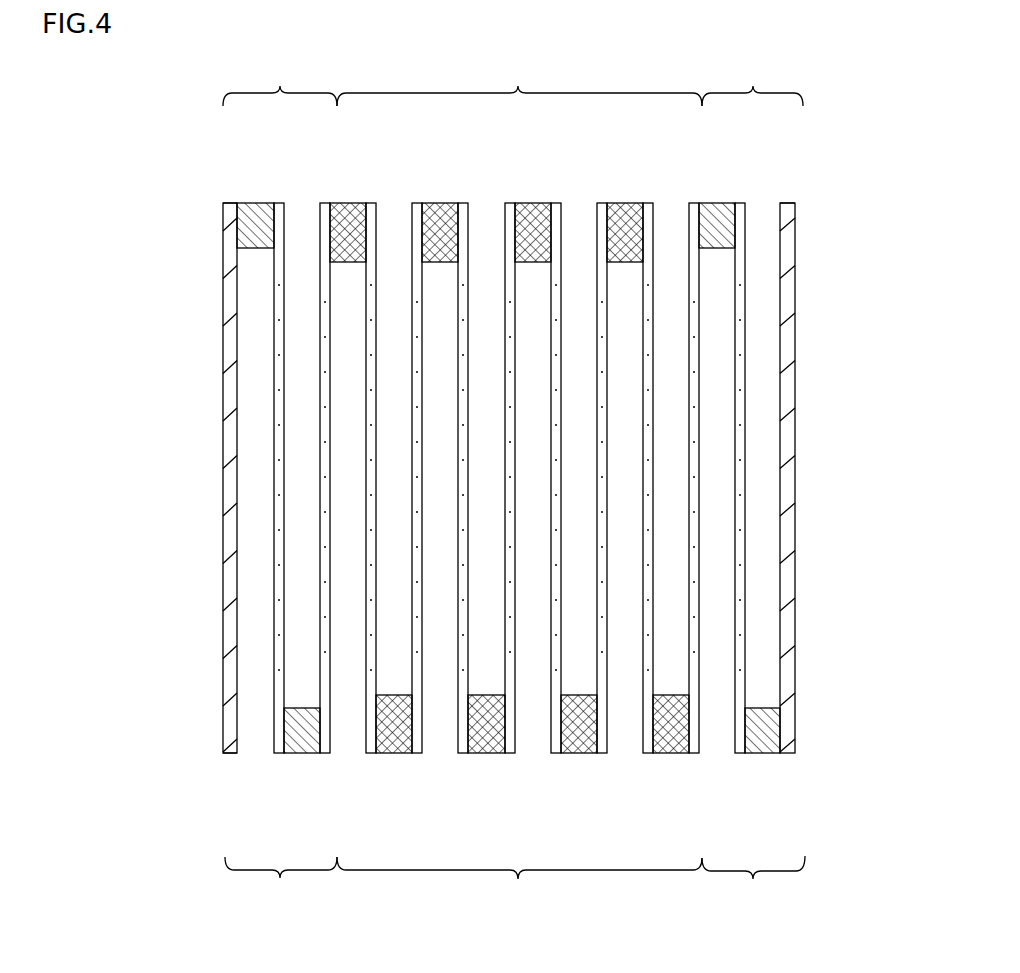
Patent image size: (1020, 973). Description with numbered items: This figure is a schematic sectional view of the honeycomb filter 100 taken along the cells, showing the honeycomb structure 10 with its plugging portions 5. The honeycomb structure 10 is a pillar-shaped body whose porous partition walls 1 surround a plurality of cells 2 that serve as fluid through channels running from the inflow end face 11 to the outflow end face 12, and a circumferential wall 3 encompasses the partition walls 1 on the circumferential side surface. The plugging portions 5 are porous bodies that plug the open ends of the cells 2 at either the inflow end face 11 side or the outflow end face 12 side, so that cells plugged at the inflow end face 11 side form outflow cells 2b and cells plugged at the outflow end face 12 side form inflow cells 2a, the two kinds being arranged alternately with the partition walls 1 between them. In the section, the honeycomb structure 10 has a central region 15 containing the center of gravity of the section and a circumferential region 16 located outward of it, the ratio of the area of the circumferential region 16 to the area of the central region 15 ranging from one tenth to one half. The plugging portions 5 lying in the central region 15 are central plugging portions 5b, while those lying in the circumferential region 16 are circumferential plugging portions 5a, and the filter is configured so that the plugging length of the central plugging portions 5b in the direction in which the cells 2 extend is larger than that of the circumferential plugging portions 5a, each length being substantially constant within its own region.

The electricity storage device 100 is at (880, 54).
The electrode laminate (unit cell) 1 is at (538, 478).
The separator 2 is at (509, 484).
The separator (first portion) 2a is at (570, 270).
The separator (second portion) 2b is at (623, 697).
The electrode (current collector plate) 3 is at (232, 360).
The connection portion 5 is at (538, 485).
The connection portion (first type) 5a is at (262, 222).
The connection portion (second type) 5b is at (443, 222).
The upper right end portion 10 is at (808, 203).
The upper left end portion 11 is at (238, 184).
The lower left end portion 12 is at (254, 775).
The central region 15 is at (519, 486).
The end region 16 is at (514, 485).